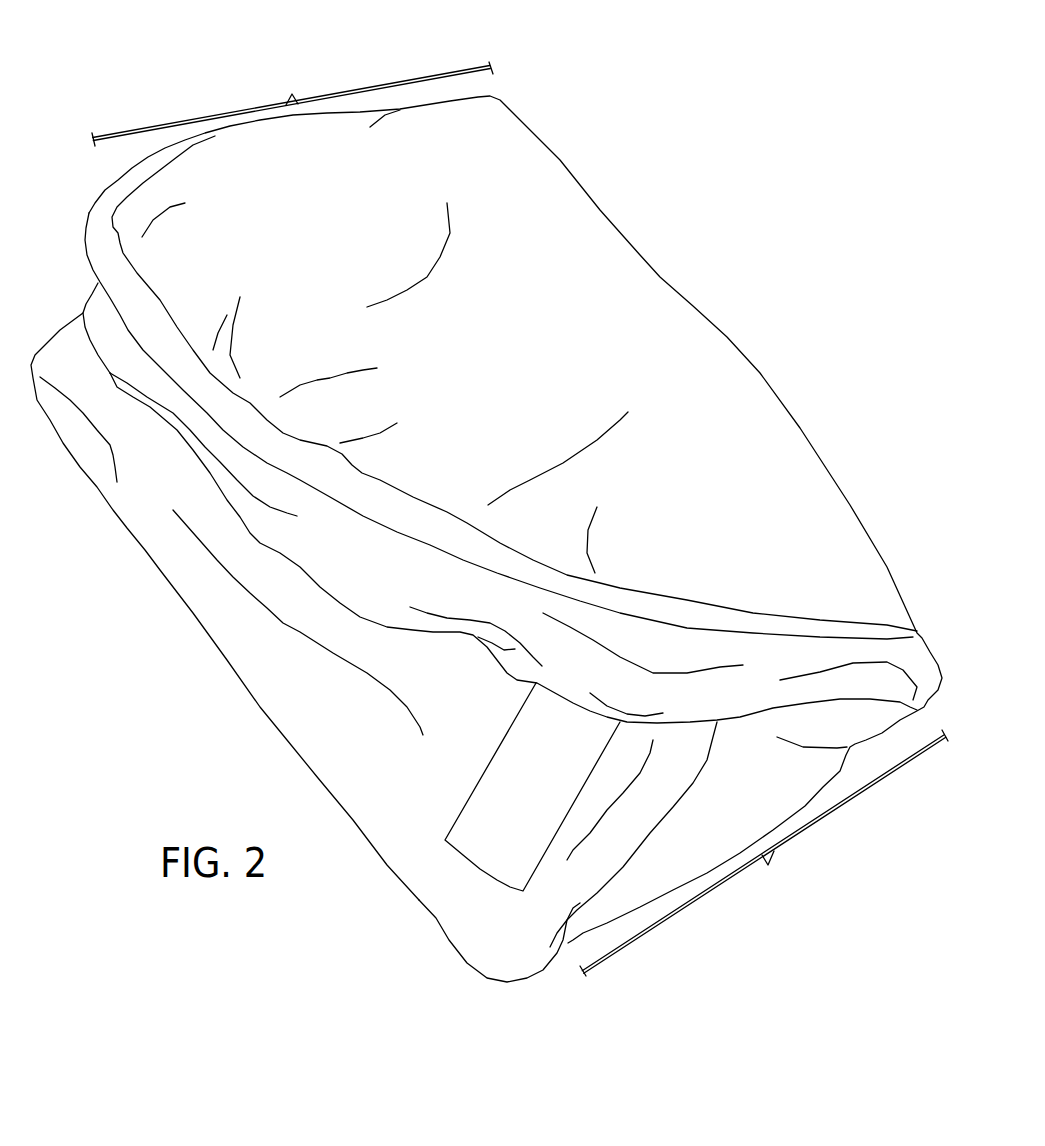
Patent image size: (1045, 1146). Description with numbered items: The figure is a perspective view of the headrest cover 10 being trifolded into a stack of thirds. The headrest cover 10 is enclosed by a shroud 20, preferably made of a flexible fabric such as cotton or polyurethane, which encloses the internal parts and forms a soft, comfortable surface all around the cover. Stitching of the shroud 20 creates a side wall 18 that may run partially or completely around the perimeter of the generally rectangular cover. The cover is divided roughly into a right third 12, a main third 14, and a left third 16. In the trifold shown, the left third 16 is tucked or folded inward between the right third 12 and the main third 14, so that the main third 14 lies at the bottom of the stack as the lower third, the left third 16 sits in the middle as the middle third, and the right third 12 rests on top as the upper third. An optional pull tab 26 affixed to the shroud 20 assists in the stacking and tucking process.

The headrest cover 10 is at (558, 72).
The right third 12 is at (292, 104).
The main third 14 is at (764, 853).
The left third 16 is at (498, 998).
The side wall 18 is at (97, 280).
The shroud 20 is at (600, 268).
The pull tab 26 is at (461, 805).